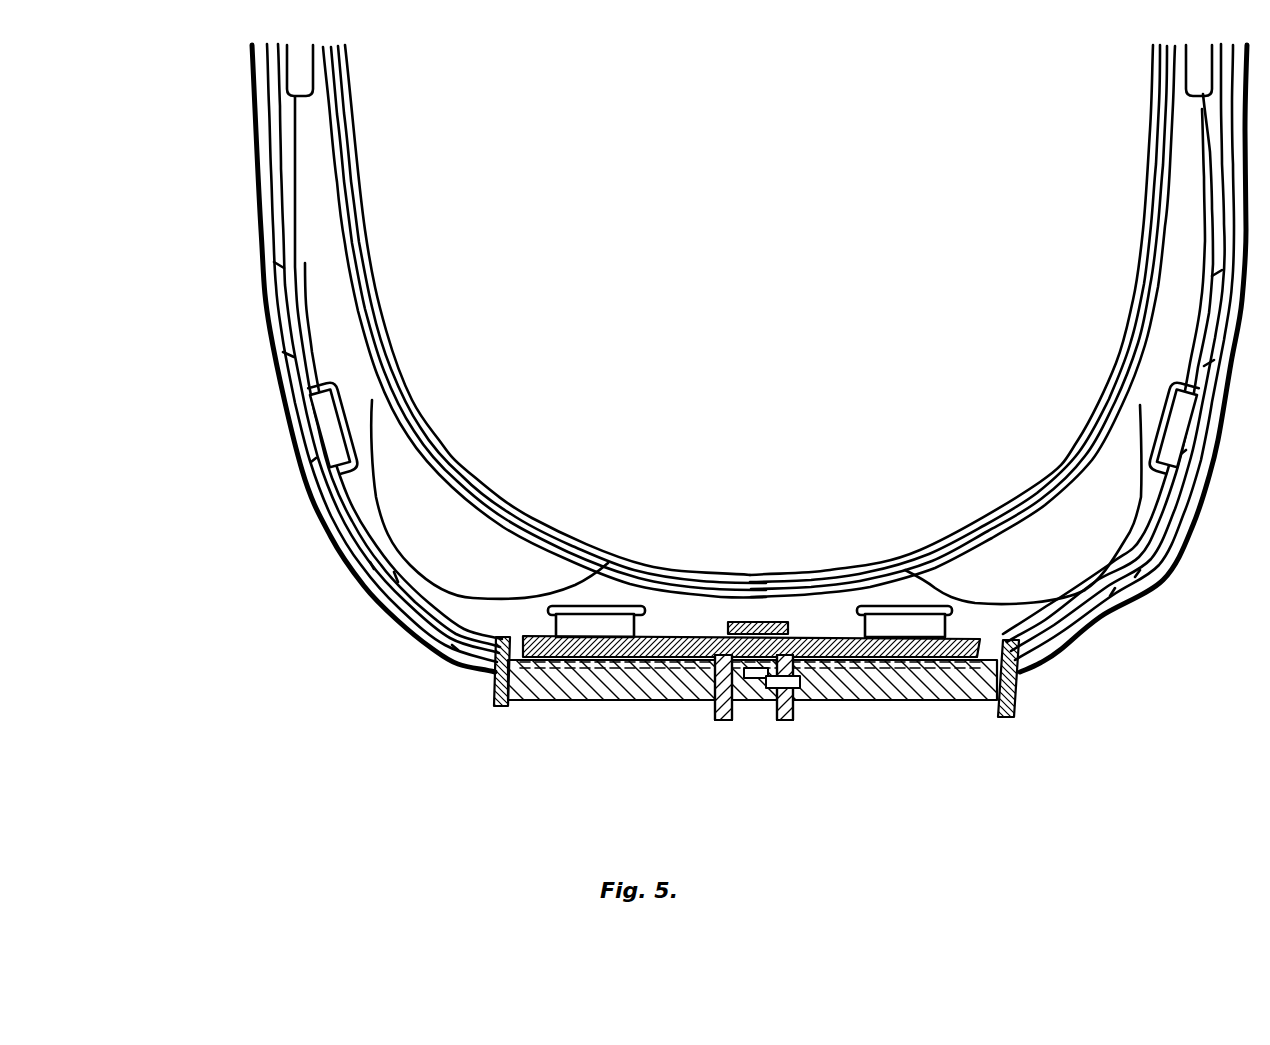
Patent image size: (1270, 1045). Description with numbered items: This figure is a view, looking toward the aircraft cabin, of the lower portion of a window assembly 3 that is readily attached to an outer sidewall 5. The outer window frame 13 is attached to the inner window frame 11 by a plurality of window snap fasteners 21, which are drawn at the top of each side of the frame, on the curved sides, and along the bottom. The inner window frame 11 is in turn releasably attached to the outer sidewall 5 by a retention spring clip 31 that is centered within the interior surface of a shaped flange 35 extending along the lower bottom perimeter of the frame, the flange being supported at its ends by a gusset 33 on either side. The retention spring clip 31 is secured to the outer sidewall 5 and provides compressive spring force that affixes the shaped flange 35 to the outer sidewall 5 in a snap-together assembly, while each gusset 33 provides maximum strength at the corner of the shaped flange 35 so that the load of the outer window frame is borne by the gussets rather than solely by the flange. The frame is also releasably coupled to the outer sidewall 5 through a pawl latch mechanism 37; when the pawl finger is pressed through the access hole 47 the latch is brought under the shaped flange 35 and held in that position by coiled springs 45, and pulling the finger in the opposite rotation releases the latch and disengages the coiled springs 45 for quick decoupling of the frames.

The window assembly 3 is at (254, 212).
The outer sidewall 5 is at (240, 436).
The inner window frame 11 is at (480, 638).
The outer window frame 13 is at (440, 535).
The window snap fastener 21 is at (325, 428).
The retention spring clip 31 is at (745, 722).
The gusset 33 is at (500, 706).
The shaped flange 35 is at (650, 700).
The pawl latch mechanism 37 is at (1017, 690).
The coiled spring 45 is at (808, 712).
The access hole 47 is at (752, 616).